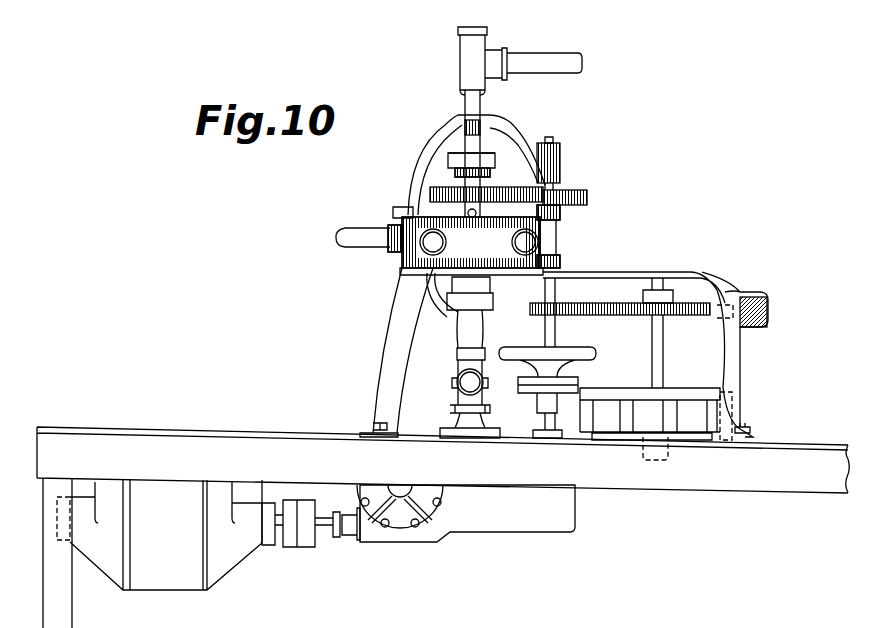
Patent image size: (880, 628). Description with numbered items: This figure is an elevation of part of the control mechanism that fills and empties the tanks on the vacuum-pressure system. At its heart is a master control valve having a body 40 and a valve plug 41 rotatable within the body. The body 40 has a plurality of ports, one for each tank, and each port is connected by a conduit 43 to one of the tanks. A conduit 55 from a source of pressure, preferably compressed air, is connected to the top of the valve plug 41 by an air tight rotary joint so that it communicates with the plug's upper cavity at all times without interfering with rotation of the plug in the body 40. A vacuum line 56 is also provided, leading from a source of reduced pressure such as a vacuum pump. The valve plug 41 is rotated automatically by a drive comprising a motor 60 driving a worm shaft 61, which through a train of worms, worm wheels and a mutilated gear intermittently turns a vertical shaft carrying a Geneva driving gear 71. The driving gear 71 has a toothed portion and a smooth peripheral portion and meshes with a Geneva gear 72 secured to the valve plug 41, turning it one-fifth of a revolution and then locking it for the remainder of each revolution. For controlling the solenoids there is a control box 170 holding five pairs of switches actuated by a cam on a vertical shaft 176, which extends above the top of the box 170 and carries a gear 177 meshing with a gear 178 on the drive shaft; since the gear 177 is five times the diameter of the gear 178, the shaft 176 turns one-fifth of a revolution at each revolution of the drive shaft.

The conduit 55 is at (557, 60).
The valve plug 41 is at (443, 212).
The conduit 43 is at (352, 230).
The body 40 is at (482, 246).
The Geneva gear 72 is at (500, 200).
The Geneva driving gear 71 is at (580, 190).
The gear 177 is at (631, 303).
The gear 178 is at (555, 341).
The vertical shaft 176 is at (660, 357).
The control box 170 is at (685, 360).
The vacuum line 56 is at (470, 380).
The motor 60 is at (198, 582).
The worm shaft 61 is at (327, 537).